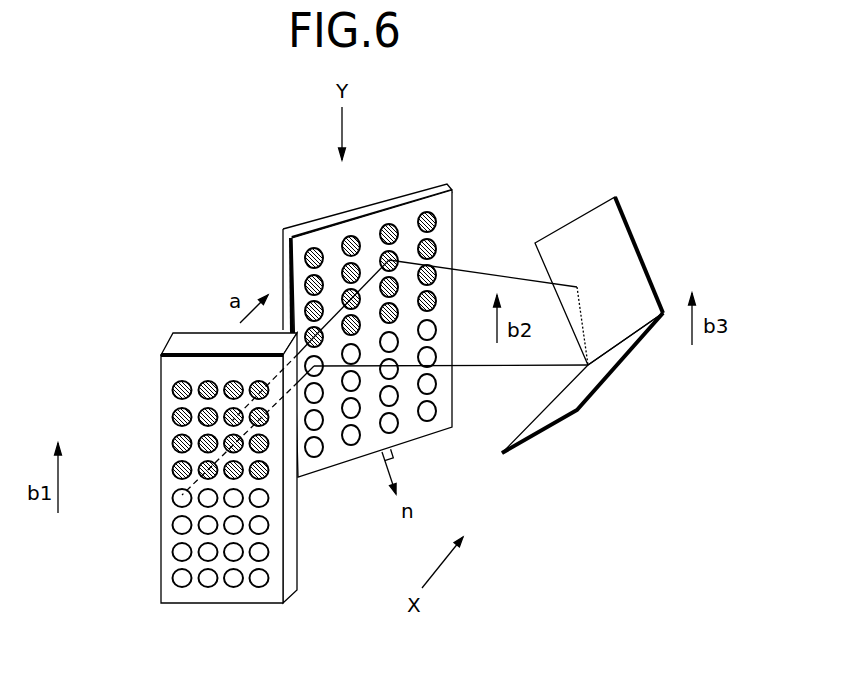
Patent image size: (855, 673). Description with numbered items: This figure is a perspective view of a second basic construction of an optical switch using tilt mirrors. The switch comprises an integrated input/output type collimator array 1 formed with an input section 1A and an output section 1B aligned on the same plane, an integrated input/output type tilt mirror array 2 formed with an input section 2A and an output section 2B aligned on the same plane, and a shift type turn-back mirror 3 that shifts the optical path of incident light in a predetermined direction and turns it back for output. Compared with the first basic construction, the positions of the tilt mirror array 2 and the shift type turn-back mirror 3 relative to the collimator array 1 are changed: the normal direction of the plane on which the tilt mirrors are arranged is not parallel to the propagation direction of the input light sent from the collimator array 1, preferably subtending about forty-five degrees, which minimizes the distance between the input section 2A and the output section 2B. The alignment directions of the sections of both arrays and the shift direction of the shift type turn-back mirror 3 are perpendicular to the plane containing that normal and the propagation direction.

The collimator array 1 is at (191, 445).
The input section 1A is at (146, 497).
The output section 1B is at (146, 380).
The tilt mirror array 2 is at (361, 330).
The input section 2A is at (464, 323).
The output section 2B is at (464, 298).
The shift type turn-back mirror 3 is at (634, 242).